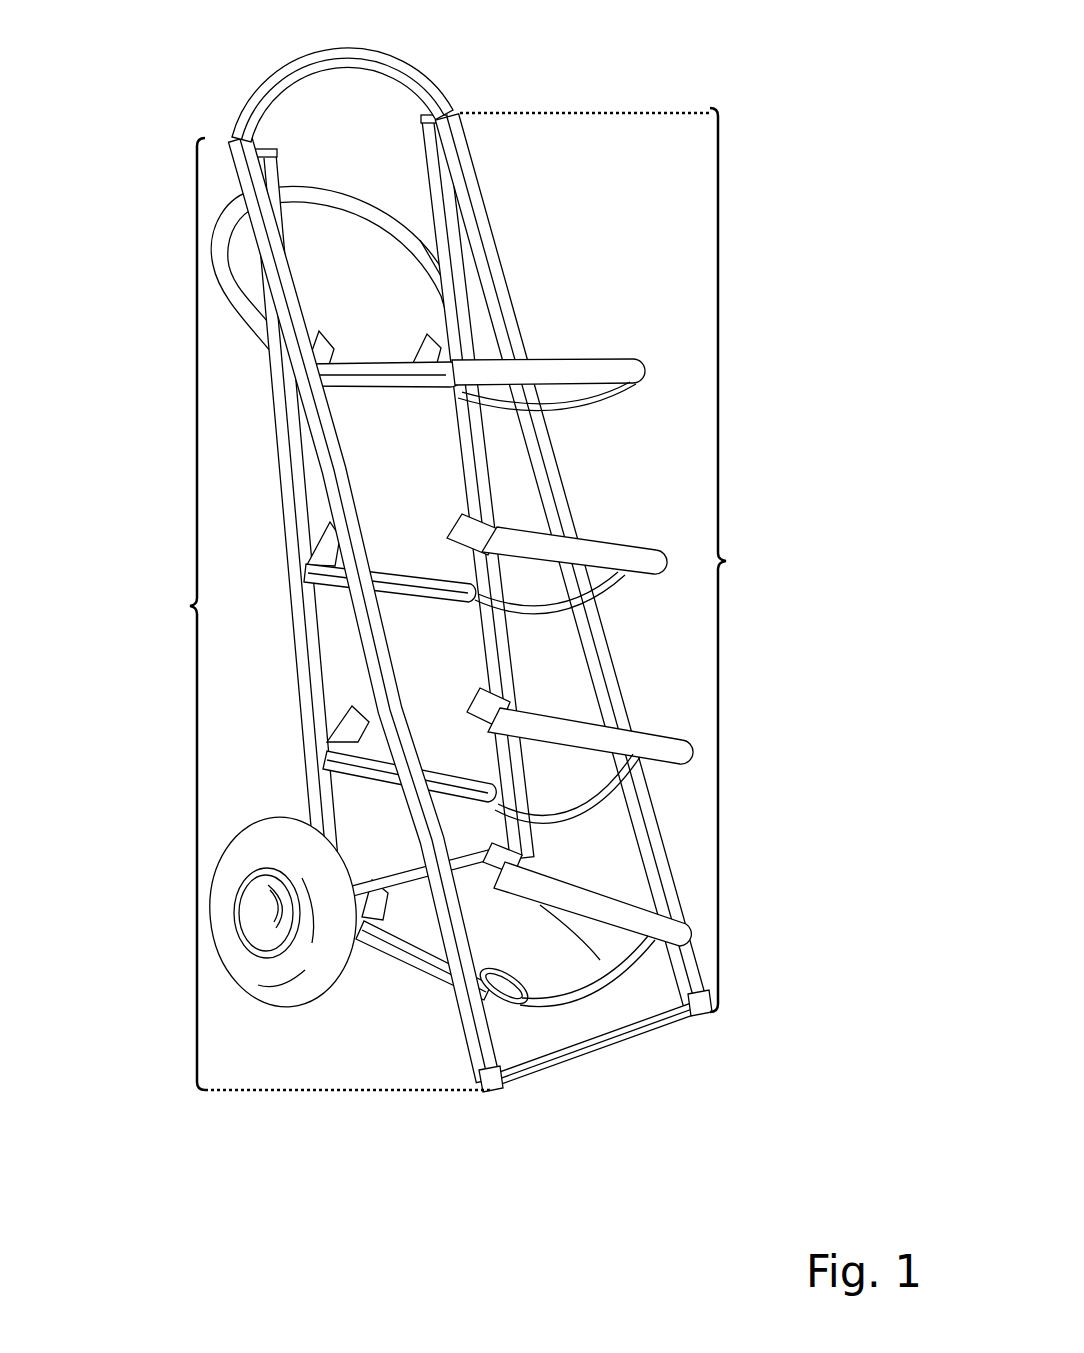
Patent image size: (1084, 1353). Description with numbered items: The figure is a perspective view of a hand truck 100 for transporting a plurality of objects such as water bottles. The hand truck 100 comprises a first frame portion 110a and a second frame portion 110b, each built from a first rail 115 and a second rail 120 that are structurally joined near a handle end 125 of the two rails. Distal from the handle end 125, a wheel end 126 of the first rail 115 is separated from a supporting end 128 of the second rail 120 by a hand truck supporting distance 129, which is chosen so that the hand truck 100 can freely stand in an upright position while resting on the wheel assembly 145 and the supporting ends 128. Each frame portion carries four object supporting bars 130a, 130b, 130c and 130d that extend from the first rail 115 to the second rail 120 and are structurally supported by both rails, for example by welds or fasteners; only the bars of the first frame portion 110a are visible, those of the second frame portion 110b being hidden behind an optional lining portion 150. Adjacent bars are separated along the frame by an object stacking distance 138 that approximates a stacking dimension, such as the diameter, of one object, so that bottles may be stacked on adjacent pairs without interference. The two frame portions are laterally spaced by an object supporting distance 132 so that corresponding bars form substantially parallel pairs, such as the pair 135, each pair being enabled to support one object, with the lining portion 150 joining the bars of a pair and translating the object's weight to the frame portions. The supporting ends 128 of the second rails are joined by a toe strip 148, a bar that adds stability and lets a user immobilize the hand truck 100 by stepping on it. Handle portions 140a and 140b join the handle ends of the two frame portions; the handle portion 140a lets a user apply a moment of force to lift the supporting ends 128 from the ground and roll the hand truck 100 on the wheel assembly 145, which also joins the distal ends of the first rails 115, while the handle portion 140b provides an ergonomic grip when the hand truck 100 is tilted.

The hand truck 100 is at (178, 46).
The first frame portion 110a is at (313, 614).
The second frame portion 110b is at (623, 560).
The first rail 115 is at (283, 499).
The second rail 120 is at (272, 256).
The handle end 125 is at (420, 132).
The wheel end 126 is at (346, 856).
The supporting end 128 is at (686, 1000).
The hand truck supporting distance 129 is at (495, 882).
The object supporting bar 130a is at (360, 384).
The object supporting bar 130b is at (410, 594).
The object supporting bar 130c is at (358, 764).
The object supporting bar 130d is at (393, 946).
The object supporting distance 132 is at (517, 1093).
The pair of object supporting bars 135 is at (468, 545).
The object stacking distance 138 is at (441, 762).
The handle portion 140a is at (365, 206).
The handle portion 140b is at (277, 77).
The wheel assembly 145 is at (284, 804).
The toe strip 148 is at (562, 1053).
The lining portion 150 is at (547, 381).